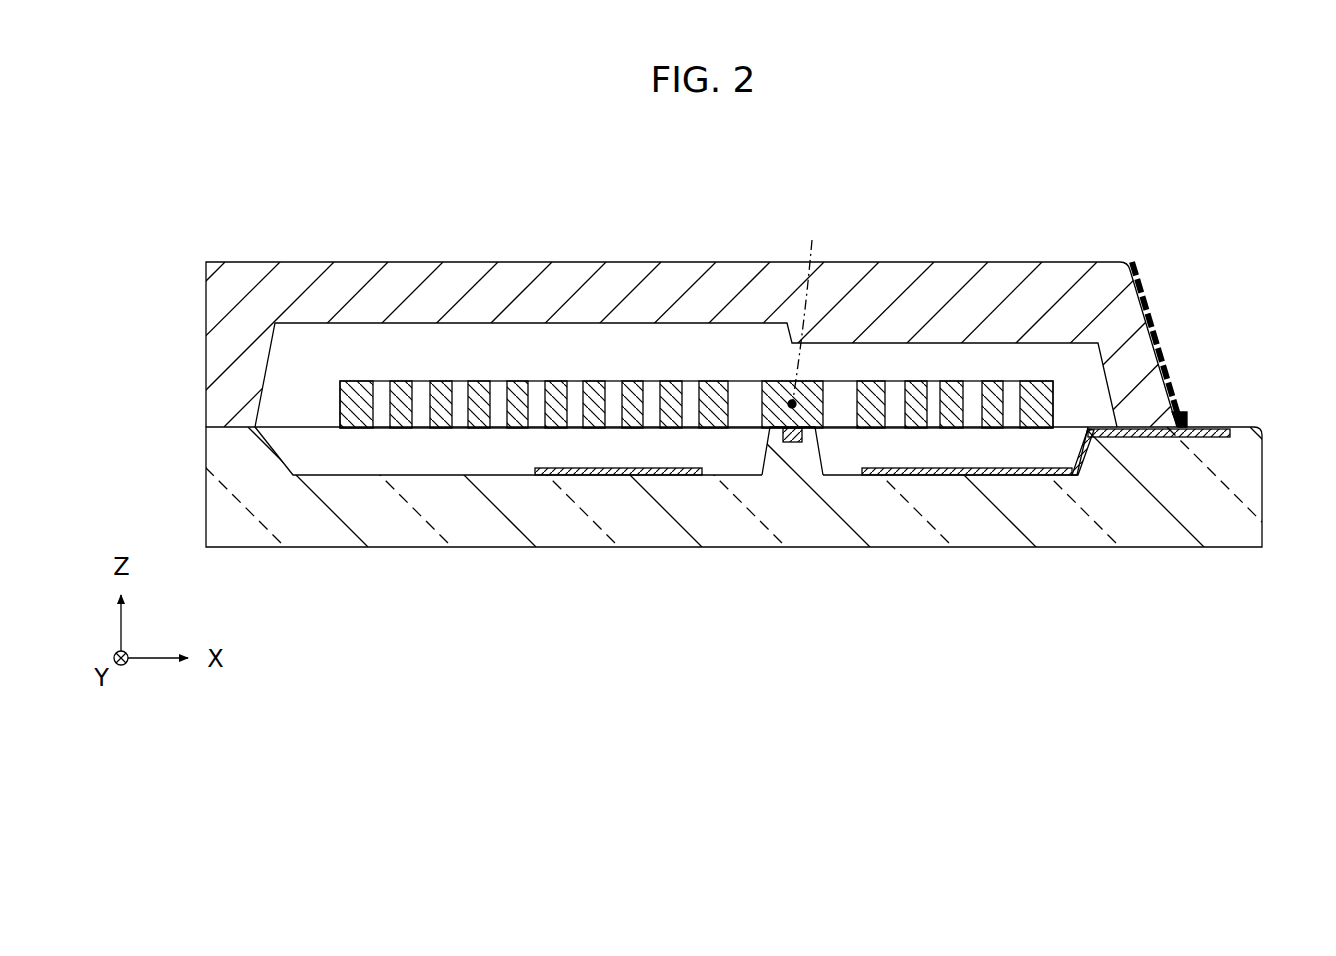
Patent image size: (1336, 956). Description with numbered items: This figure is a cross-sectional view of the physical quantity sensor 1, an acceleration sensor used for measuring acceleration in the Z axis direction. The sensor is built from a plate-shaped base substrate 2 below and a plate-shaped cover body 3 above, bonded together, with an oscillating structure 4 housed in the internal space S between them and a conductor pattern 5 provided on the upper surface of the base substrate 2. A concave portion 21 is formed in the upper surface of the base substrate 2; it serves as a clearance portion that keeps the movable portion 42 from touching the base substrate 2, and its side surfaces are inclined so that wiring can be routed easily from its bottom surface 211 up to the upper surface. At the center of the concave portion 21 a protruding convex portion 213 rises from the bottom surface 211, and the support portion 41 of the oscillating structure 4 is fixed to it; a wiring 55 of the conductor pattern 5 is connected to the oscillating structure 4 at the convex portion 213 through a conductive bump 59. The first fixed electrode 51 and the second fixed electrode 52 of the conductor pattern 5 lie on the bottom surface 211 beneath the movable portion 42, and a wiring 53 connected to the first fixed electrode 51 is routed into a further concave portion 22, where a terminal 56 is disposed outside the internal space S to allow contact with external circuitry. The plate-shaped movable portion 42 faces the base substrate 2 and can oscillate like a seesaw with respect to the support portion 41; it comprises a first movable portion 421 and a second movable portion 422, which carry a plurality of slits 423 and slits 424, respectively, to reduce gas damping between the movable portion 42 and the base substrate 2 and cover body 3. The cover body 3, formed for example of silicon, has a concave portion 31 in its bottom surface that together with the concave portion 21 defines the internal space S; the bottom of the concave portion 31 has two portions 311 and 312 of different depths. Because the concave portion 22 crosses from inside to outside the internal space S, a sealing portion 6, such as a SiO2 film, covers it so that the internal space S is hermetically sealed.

The physical quantity sensor 1 is at (1152, 172).
The base substrate 2 is at (750, 515).
The cover body 3 is at (687, 305).
The oscillating structure 4 is at (696, 409).
The conductor pattern 5 is at (915, 494).
The sealing portion 6 is at (1165, 312).
The concave portion 21 is at (290, 452).
The concave portion 22 is at (1193, 432).
The concave portion 31 is at (270, 348).
The support portion 41 is at (776, 393).
The movable portion 42 is at (696, 410).
The first fixed electrode 51 is at (965, 476).
The second fixed electrode 52 is at (642, 476).
The wiring 53 is at (1132, 438).
The wiring 55 is at (787, 443).
The terminal 56 is at (1220, 428).
The conductive bump 59 is at (797, 435).
The bottom surface 211 is at (833, 475).
The convex portion 213 is at (762, 451).
The portion 311 is at (1013, 343).
The portion 312 is at (300, 327).
The first movable portion 421 is at (946, 378).
The second movable portion 422 is at (357, 378).
The slits 423 is at (1003, 400).
The slits 424 is at (507, 403).
The internal space S is at (290, 385).